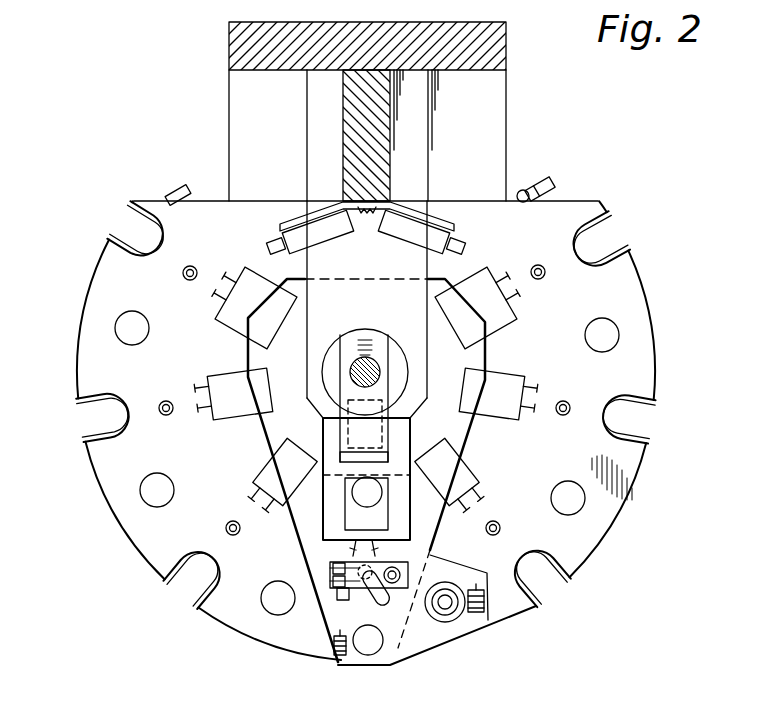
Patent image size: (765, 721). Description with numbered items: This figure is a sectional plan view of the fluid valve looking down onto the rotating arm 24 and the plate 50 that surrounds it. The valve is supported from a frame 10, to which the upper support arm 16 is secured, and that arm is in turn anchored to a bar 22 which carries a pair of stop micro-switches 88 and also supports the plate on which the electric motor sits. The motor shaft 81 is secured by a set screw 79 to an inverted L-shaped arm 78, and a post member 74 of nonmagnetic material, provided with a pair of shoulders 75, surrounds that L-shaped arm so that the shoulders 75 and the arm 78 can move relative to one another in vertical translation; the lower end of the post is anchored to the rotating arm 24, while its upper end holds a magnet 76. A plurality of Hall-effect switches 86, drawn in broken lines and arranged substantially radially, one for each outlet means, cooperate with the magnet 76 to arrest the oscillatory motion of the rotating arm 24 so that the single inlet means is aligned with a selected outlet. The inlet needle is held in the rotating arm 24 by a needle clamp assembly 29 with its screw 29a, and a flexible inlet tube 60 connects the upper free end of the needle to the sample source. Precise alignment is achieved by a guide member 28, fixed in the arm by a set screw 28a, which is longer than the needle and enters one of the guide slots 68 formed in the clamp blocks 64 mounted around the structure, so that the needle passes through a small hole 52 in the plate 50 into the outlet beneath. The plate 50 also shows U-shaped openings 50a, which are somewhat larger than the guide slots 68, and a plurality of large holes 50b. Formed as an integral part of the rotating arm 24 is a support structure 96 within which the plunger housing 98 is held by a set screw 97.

The frame 10 is at (246, 40).
The upper support arm 16 is at (307, 82).
The bar 22 is at (343, 97).
The rotating arm 24 is at (335, 540).
The guide member 28 is at (367, 656).
The set screw 28a is at (338, 668).
The needle clamp assembly 29 is at (328, 602).
The screw 29a is at (343, 600).
The plate 50 is at (112, 510).
The U-shaped openings 50a is at (92, 318).
The large holes 50b is at (157, 472).
The hole 52 is at (166, 400).
The flexible inlet tube 60 is at (392, 661).
The clamp blocks 64 is at (177, 194).
The guide slots 68 is at (118, 243).
The post member 74 is at (412, 535).
The shoulders 75 is at (266, 438).
The magnet 76 is at (355, 500).
The inverted L-shaped arm 78 is at (370, 422).
The set screw 79 is at (353, 332).
The shaft 81 is at (403, 338).
The Hall-effect switches 86 is at (238, 372).
The stop micro-switches 88 is at (450, 250).
The support structure 96 is at (437, 640).
The set screw 97 is at (490, 631).
The plunger housing 98 is at (460, 620).